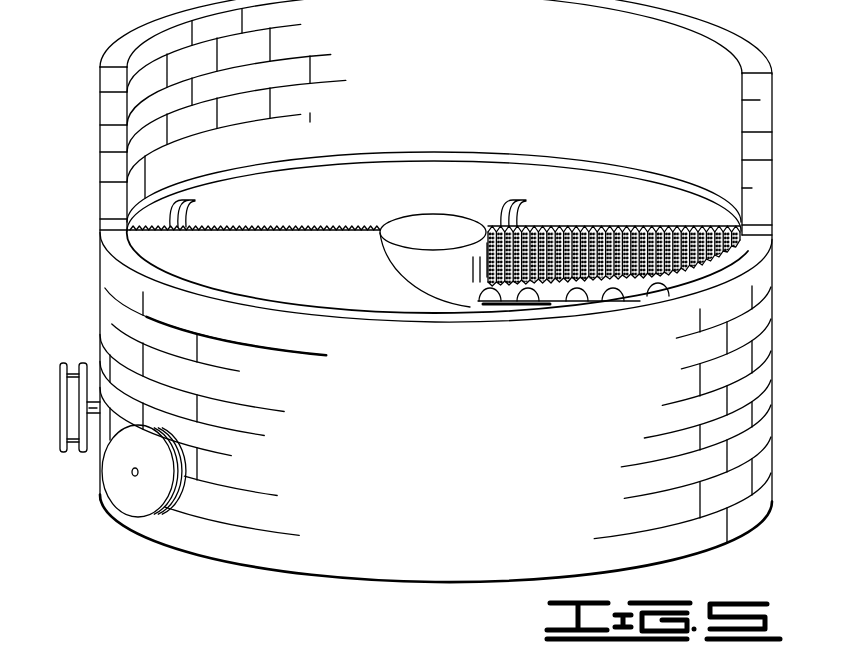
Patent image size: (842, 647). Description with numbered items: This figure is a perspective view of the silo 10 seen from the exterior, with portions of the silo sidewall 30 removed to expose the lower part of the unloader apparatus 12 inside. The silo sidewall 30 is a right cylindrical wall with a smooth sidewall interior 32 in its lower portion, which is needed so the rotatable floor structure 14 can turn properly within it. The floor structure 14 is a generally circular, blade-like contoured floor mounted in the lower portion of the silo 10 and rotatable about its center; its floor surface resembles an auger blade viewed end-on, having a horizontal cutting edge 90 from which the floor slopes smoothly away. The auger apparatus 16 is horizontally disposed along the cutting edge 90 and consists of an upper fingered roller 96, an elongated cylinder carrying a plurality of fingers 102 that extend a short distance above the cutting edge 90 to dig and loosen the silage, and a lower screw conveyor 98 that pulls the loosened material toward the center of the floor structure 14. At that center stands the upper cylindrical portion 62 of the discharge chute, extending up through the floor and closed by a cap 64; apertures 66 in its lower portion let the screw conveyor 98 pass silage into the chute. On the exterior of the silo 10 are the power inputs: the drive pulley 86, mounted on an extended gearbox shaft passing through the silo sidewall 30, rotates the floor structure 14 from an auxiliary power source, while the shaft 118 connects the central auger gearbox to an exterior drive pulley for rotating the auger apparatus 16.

The silo 10 is at (76, 70).
The unloader apparatus 12 is at (413, 148).
The floor structure 14 is at (519, 164).
The auger apparatus 16 is at (607, 218).
The silo sidewall 30 is at (108, 140).
The sidewall interior 32 is at (233, 151).
The upper cylindrical portion 62 is at (420, 265).
The cap 64 is at (430, 229).
The apertures 66 is at (467, 297).
The drive pulley 86 is at (60, 412).
The cutting edge 90 is at (248, 243).
The fingered roller 96 is at (657, 240).
The screw conveyor 98 is at (550, 307).
The fingers 102 is at (195, 201).
The shaft 118 is at (117, 470).